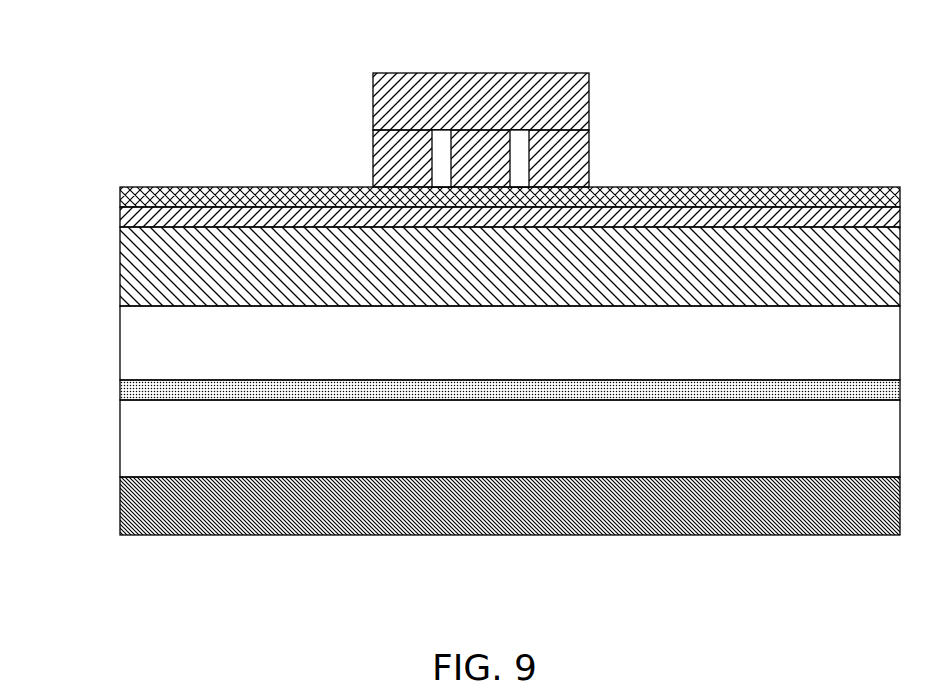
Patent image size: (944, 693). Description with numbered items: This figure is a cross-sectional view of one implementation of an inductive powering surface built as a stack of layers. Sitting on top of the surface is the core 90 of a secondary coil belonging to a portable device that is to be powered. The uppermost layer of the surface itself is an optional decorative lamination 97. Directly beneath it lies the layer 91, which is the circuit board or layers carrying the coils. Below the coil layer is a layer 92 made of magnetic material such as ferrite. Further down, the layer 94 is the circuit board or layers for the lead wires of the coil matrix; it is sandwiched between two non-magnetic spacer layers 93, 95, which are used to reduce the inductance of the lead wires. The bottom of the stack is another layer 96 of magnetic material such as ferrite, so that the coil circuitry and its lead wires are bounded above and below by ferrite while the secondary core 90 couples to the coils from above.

The core of a secondary coil 90 is at (589, 157).
The coil circuit board layer 91 is at (122, 216).
The magnetic layer 92 is at (133, 265).
The non-magnetic spacer layer 93 is at (140, 353).
The lead wire circuit board layer 94 is at (130, 390).
The non-magnetic spacer layer 95 is at (132, 448).
The magnetic layer 96 is at (120, 502).
The decorative lamination 97 is at (122, 197).